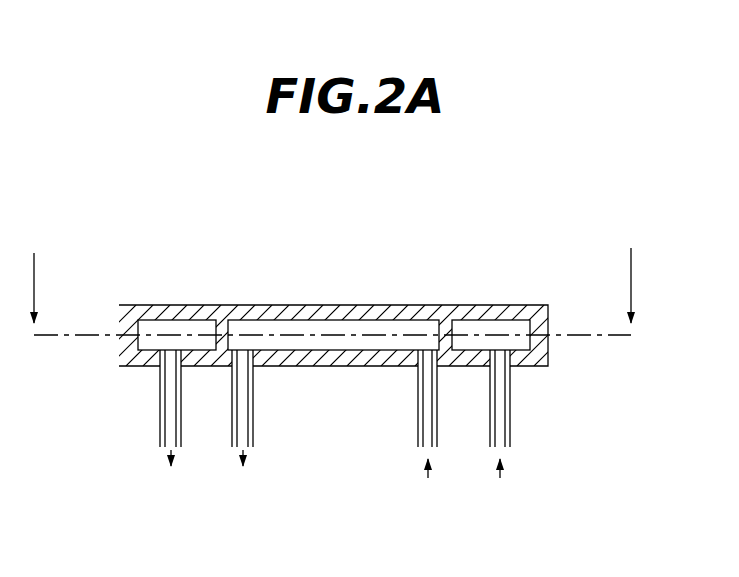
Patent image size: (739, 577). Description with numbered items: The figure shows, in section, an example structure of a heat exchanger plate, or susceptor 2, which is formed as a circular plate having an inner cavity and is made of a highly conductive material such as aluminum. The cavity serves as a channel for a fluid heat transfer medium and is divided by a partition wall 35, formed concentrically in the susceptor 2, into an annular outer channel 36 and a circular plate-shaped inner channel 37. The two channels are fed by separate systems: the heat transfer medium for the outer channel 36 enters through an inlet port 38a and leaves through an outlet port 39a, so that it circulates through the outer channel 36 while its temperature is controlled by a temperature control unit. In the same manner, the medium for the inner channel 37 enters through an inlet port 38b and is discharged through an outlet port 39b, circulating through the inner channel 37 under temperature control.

The heat exchanger plate (susceptor) 2 is at (356, 297).
The partition wall 35 is at (447, 326).
The outer channel 36 is at (185, 322).
The inner channel 37 is at (297, 330).
The inlet port 38a is at (511, 406).
The inlet port 38b is at (418, 421).
The outlet port 39a is at (160, 401).
The outlet port 39b is at (254, 393).